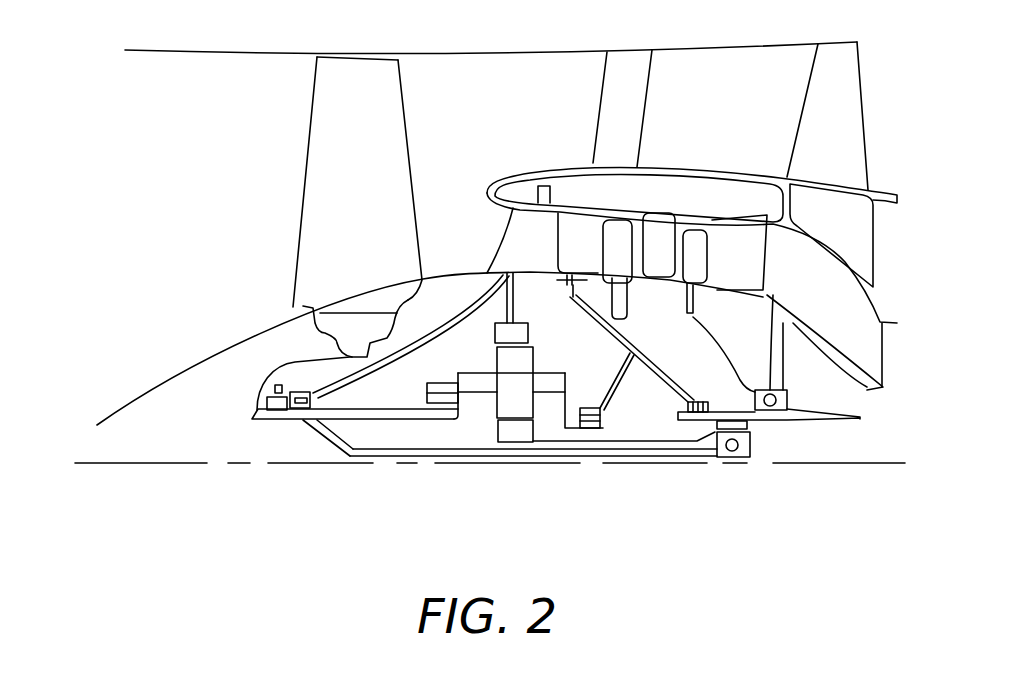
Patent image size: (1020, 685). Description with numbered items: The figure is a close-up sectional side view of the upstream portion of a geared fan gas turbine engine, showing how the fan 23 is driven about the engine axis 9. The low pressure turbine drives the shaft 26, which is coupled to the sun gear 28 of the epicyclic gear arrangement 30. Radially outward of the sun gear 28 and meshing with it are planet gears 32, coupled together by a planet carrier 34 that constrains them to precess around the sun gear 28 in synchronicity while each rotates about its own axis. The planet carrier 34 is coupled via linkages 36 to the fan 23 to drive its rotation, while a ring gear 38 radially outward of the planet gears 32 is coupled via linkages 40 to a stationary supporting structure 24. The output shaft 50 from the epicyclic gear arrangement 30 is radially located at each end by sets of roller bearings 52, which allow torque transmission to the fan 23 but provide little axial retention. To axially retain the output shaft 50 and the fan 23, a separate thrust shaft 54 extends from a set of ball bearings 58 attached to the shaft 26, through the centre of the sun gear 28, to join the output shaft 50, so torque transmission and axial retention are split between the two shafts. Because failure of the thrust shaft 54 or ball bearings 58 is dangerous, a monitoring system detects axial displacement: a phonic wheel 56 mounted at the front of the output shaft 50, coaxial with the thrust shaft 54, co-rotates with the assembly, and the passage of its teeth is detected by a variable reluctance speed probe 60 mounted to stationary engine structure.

The engine axis 9 is at (187, 465).
The fan 23 is at (333, 183).
The stationary supporting structure 24 is at (517, 242).
The shaft 26 is at (642, 445).
The sun gear 28 is at (520, 443).
The epicyclic gear arrangement 30 is at (503, 405).
The planet gears 32 is at (517, 433).
The planet carrier 34 is at (557, 400).
The linkages 36 is at (458, 417).
The ring gear 38 is at (517, 335).
The linkages 40 is at (513, 305).
The output shaft 50 is at (350, 408).
The roller bearings 52 is at (297, 408).
The thrust shaft 54 is at (393, 452).
The phonic wheel 56 is at (268, 400).
The ball bearings 58 is at (730, 444).
The variable reluctance speed probe 60 is at (277, 388).